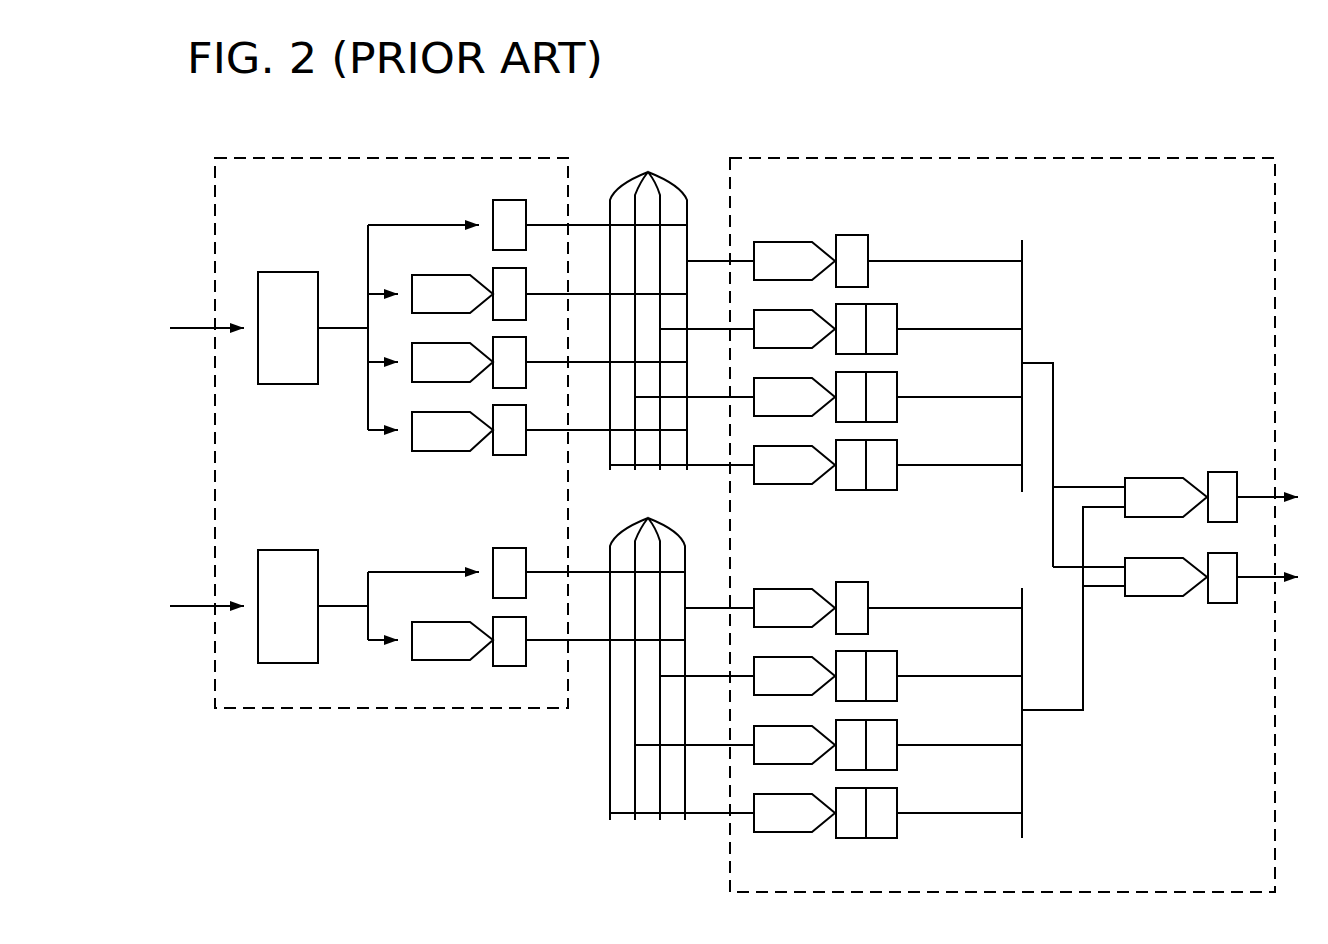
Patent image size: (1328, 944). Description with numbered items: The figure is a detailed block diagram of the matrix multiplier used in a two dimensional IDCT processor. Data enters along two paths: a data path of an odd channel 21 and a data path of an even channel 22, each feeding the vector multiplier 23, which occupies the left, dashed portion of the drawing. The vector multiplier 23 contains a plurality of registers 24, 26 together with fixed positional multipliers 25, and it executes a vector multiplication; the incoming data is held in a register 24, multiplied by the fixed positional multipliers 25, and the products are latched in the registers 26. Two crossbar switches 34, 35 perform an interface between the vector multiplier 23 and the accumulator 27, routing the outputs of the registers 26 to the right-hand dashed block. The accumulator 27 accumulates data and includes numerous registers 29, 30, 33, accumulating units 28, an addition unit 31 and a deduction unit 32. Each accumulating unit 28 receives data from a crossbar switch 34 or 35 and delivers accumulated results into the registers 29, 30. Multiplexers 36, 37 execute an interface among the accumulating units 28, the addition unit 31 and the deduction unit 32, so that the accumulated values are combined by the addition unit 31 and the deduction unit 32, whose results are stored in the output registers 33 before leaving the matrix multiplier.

The data path of an odd channel 21 is at (172, 328).
The data path of an even channel 22 is at (173, 606).
The vector multiplier 23 is at (390, 158).
The register 24 is at (290, 272).
The fixed positional multiplier 25 is at (417, 275).
The register 26 is at (526, 233).
The accumulator 27 is at (1000, 158).
The accumulating unit 28 is at (785, 281).
The register 29 is at (868, 250).
The register 30 is at (897, 335).
The addition unit 31 is at (1152, 478).
The deduction unit 32 is at (1152, 596).
The register 33 is at (1222, 472).
The crossbar switch 34 is at (606, 307).
The crossbar switch 35 is at (605, 656).
The multiplexer 36 is at (1022, 240).
The multiplexer 37 is at (1022, 588).